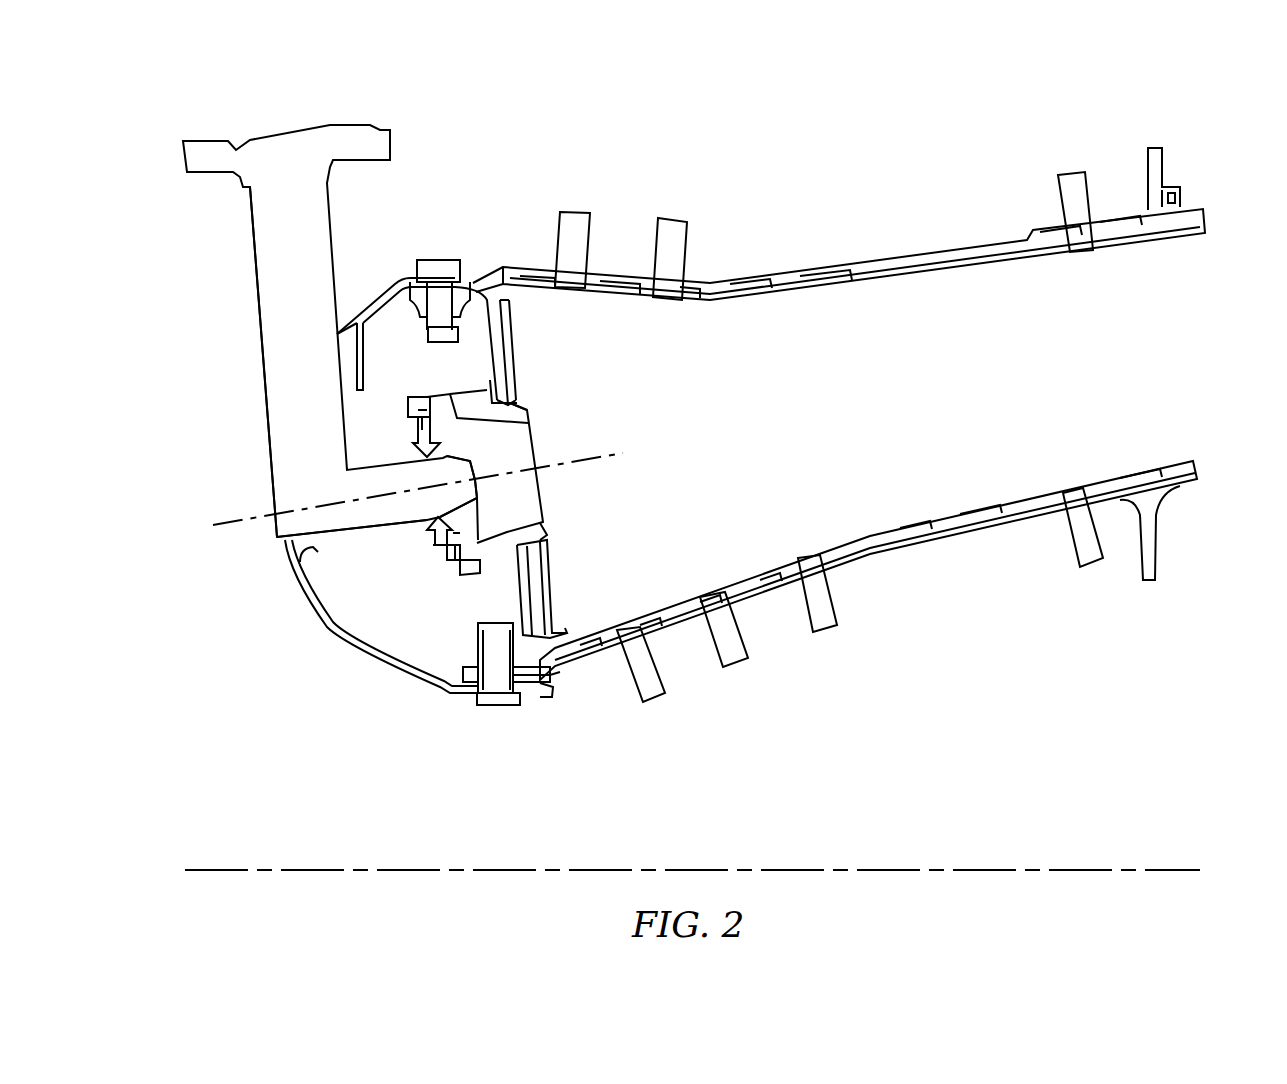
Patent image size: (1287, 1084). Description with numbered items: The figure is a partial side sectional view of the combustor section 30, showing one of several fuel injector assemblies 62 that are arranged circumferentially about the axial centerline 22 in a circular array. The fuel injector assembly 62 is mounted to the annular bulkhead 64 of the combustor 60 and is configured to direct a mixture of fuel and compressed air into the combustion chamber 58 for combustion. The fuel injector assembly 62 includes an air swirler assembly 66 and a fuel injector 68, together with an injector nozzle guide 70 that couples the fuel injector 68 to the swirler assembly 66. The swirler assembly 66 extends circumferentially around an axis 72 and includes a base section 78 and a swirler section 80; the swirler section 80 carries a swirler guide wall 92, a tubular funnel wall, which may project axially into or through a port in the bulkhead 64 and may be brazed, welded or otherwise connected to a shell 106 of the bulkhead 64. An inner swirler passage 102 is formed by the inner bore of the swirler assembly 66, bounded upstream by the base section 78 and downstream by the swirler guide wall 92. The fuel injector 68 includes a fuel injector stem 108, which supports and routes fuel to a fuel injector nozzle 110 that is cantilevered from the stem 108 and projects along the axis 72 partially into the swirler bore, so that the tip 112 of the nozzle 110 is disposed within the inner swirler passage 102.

The axial centerline 22 is at (1172, 870).
The combustor section 30 is at (1195, 119).
The combustion chamber 58 is at (875, 395).
The combustor 60 is at (861, 236).
The fuel injector assembly 62 is at (247, 458).
The bulkhead 64 is at (565, 580).
The air swirler assembly 66 is at (535, 398).
The fuel injector 68 is at (256, 537).
The injector nozzle guide 70 is at (414, 547).
The axis 72 is at (623, 453).
The base section 78 is at (425, 396).
The swirler section 80 is at (482, 376).
The swirler guide wall 92 is at (546, 530).
The inner swirler passage 102 is at (500, 445).
The shell 106 is at (560, 672).
The fuel injector stem 108 is at (238, 280).
The fuel injector nozzle 110 is at (373, 545).
The tip 112 is at (530, 484).